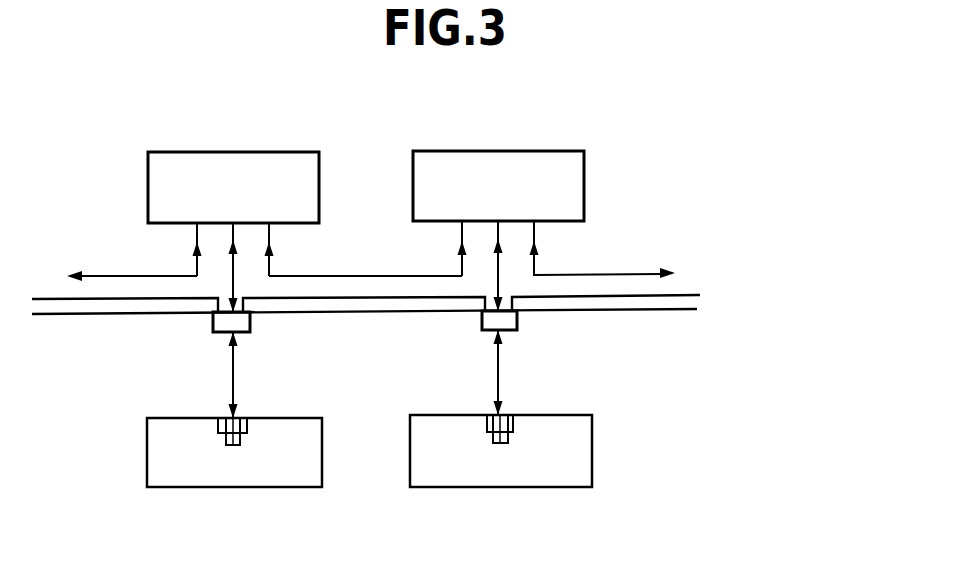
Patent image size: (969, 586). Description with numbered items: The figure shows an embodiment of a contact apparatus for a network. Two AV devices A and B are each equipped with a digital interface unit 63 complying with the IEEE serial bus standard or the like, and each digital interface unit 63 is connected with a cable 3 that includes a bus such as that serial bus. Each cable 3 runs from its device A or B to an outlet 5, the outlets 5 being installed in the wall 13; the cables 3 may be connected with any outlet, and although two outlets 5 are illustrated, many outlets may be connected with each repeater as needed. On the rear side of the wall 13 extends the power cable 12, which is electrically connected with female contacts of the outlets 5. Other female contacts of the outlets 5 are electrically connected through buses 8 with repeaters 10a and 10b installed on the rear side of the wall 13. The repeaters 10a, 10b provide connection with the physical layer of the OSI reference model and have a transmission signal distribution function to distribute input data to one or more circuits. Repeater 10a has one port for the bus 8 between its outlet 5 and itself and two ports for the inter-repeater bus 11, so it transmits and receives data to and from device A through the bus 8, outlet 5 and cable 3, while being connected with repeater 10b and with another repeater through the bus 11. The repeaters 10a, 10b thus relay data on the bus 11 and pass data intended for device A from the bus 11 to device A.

The repeater 10a is at (272, 152).
The repeater 10b is at (536, 151).
The inter-repeater bus 11 is at (112, 276).
The power cable 12 is at (604, 296).
The wall 13 is at (70, 314).
The bus 8 is at (234, 276).
The outlet 5 is at (215, 333).
The cable 3 is at (236, 372).
The digital interface unit 63 is at (219, 427).
The device A is at (322, 437).
The device B is at (592, 443).